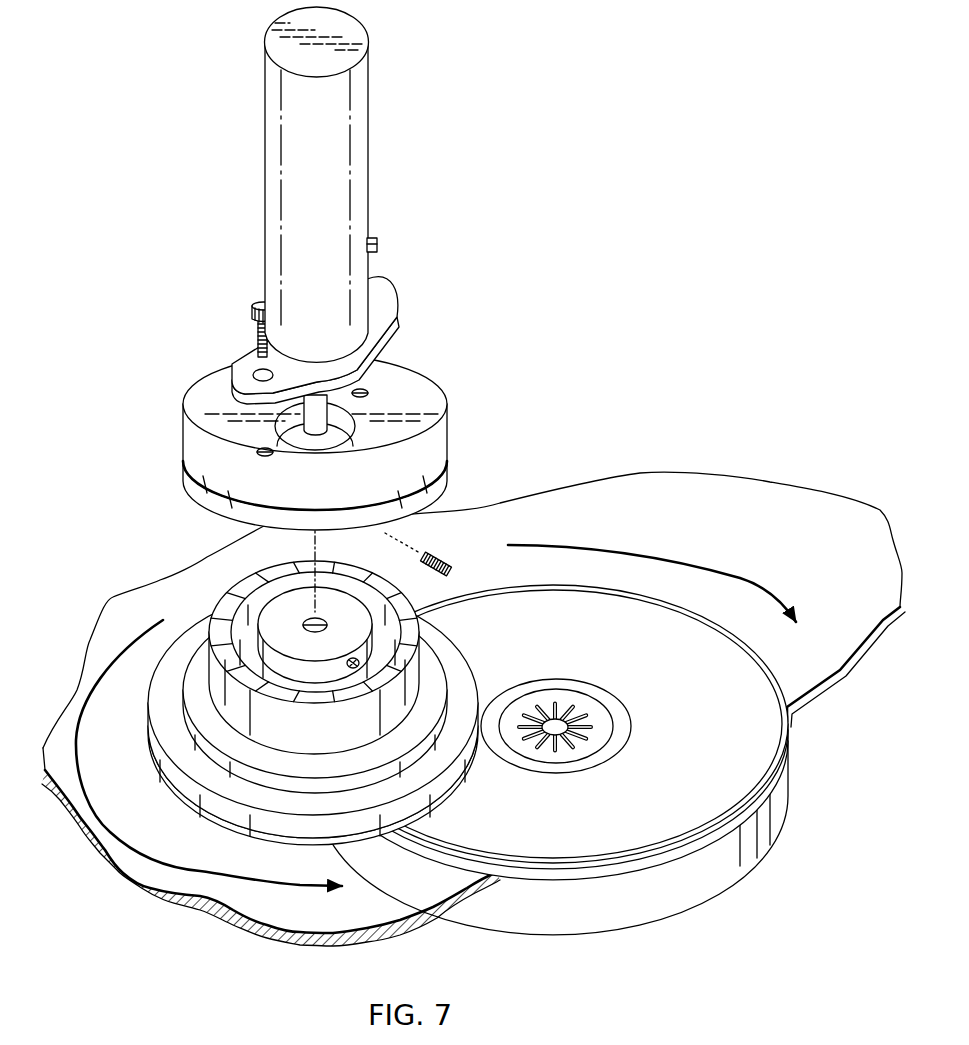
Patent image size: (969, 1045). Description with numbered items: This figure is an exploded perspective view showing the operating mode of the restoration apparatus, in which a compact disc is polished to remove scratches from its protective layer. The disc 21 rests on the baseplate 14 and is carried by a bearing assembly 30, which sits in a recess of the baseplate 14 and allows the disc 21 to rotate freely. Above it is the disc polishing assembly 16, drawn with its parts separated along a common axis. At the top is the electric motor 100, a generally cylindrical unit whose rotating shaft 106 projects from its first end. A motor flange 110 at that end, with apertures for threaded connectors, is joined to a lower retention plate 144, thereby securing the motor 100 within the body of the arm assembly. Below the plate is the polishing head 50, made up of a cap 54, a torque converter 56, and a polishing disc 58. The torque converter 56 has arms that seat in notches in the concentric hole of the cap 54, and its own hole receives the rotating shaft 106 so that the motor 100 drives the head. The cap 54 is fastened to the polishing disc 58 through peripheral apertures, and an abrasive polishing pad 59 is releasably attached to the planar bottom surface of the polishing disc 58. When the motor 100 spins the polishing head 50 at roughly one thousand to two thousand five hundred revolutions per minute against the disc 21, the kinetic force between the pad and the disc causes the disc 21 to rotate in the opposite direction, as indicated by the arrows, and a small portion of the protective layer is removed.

The baseplate 14 is at (473, 682).
The disc polishing assembly 16 is at (335, 268).
The disc 21 is at (740, 760).
The bearing assembly 30 is at (742, 872).
The polishing head 50 is at (252, 696).
The cap 54 is at (220, 675).
The torque converter 56 is at (287, 600).
The polishing disc 58 is at (240, 788).
The polishing pad 59 is at (108, 866).
The electric motor 100 is at (372, 143).
The rotating shaft 106 is at (345, 412).
The motor flange 110 is at (240, 356).
The lower retention plate 144 is at (413, 450).